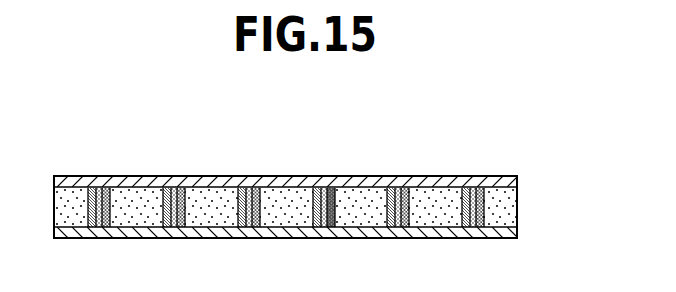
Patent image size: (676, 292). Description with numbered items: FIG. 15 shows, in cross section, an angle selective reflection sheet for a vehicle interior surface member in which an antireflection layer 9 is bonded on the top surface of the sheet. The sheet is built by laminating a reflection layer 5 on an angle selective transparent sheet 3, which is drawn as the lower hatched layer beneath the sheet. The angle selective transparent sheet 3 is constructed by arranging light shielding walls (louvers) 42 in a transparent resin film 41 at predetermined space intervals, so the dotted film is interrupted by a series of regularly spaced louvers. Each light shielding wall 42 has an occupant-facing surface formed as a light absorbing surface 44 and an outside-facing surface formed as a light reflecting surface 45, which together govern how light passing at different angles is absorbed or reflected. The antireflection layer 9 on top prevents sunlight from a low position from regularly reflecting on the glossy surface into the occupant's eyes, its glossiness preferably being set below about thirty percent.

The angle selective transparent sheet 3 is at (517, 206).
The reflection layer 5 is at (493, 238).
The antireflection layer 9 is at (470, 188).
The transparent resin film 41 is at (133, 195).
The light shielding wall (louver) 42 is at (317, 201).
The light absorbing surface 44 is at (346, 194).
The light reflecting surface 45 is at (308, 203).